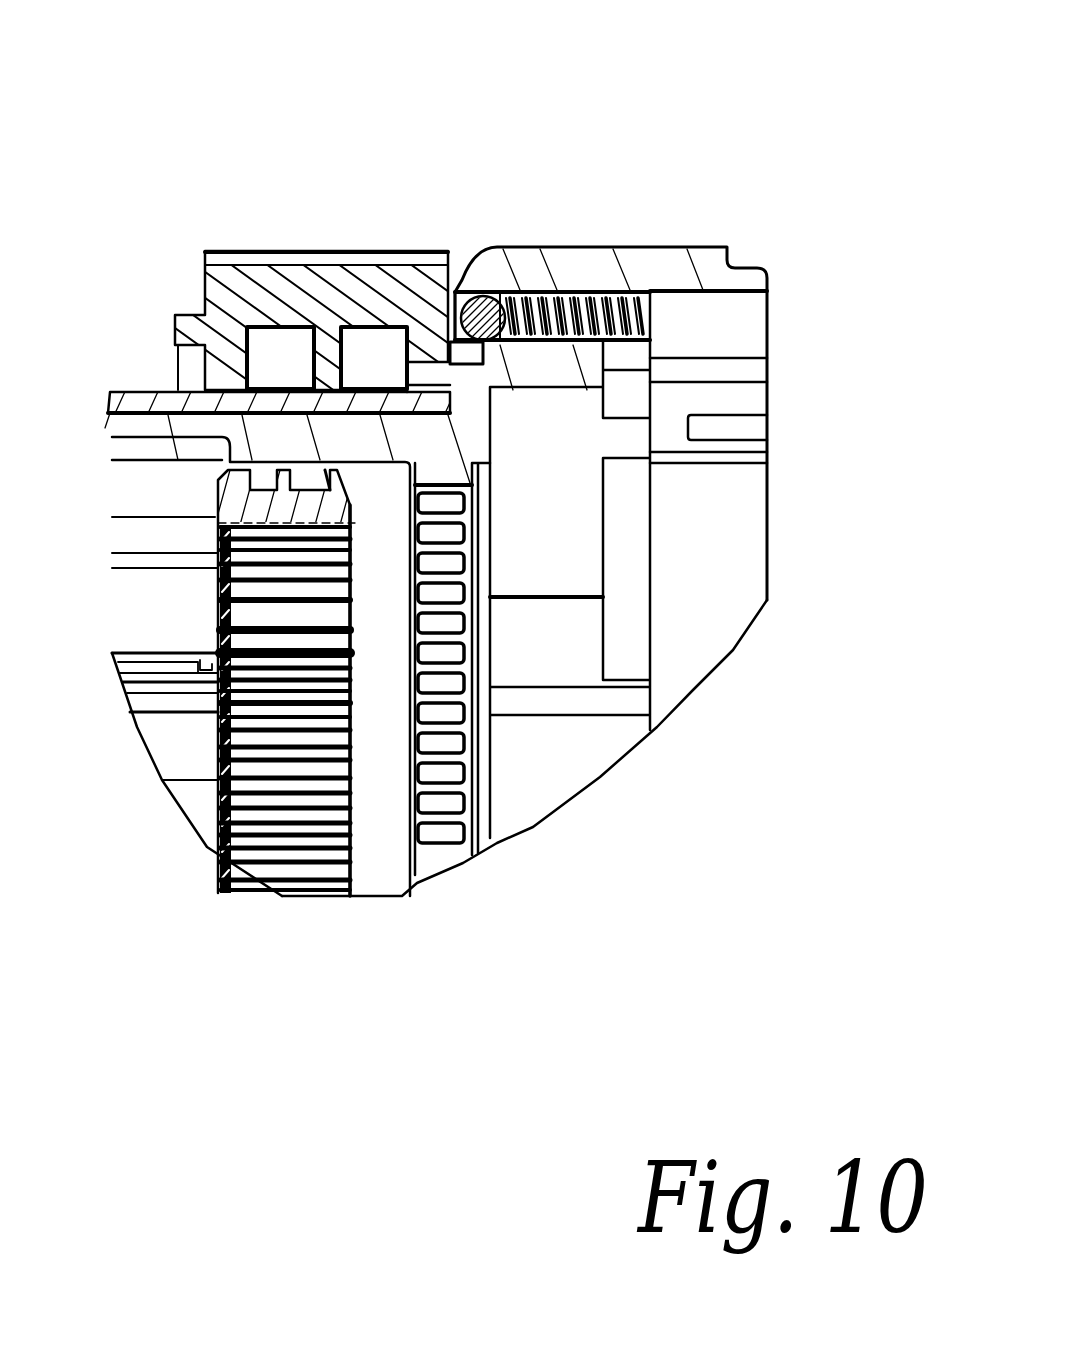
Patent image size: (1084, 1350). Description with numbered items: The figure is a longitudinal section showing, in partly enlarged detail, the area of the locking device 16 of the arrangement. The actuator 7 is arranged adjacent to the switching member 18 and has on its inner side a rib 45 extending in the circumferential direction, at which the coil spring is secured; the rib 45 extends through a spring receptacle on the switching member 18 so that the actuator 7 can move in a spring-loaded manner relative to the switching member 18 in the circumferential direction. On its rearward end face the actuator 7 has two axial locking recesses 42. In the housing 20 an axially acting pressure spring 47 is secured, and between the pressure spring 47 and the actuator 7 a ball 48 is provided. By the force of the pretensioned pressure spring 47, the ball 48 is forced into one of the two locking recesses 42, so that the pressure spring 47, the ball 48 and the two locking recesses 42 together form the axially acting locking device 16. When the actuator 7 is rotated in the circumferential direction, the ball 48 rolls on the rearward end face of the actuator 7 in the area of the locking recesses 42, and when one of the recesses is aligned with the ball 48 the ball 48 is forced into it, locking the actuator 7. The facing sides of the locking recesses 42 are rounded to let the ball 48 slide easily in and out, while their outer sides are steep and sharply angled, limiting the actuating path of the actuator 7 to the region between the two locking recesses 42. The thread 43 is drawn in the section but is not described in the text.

The actuator 7 is at (288, 282).
The locking device 16 is at (527, 272).
The switching member 18 is at (128, 392).
The housing 20 is at (770, 272).
The locking recesses 42 is at (456, 288).
The thread 43 is at (598, 290).
The rib 45 is at (333, 355).
The pressure spring 47 is at (653, 318).
The ball 48 is at (481, 298).